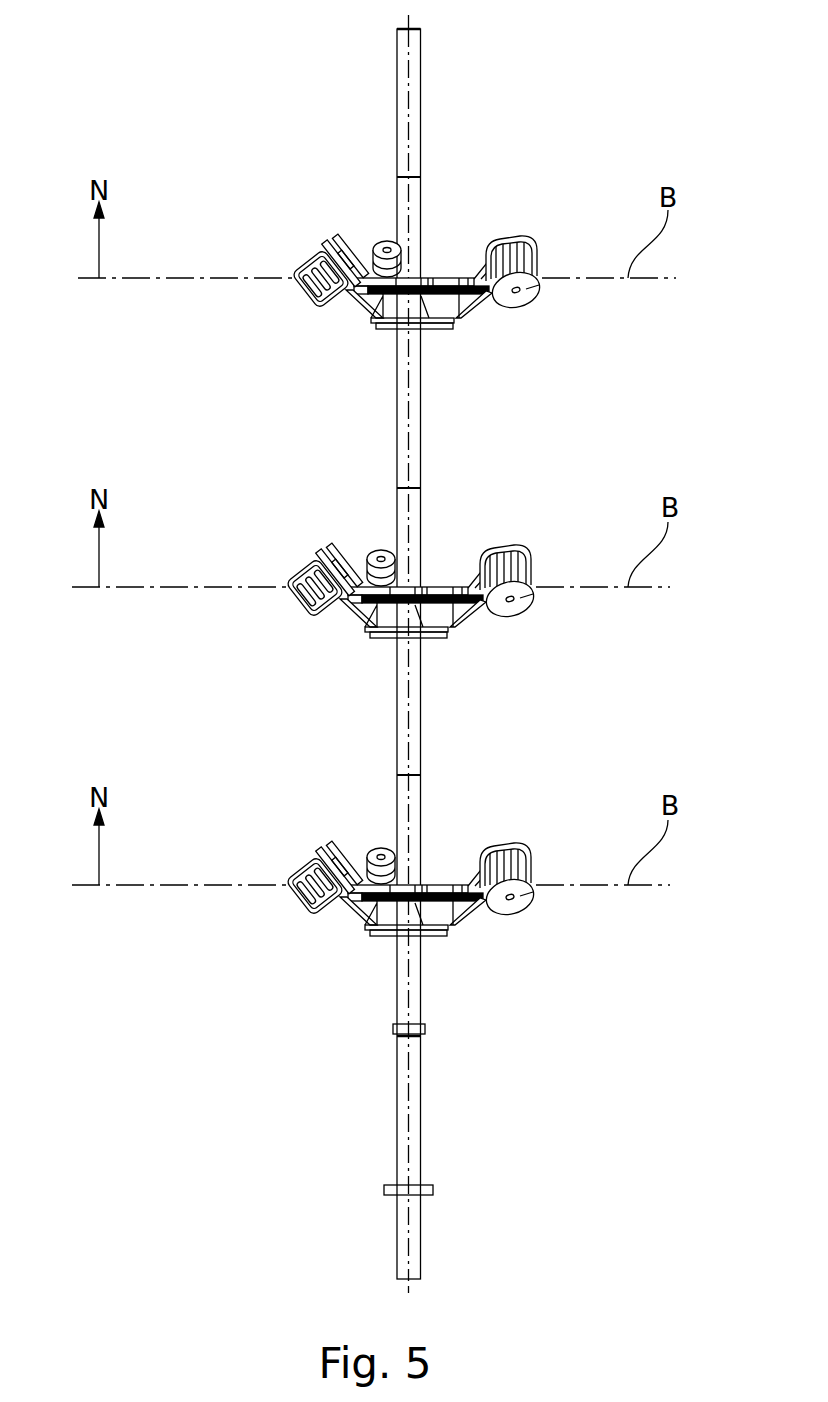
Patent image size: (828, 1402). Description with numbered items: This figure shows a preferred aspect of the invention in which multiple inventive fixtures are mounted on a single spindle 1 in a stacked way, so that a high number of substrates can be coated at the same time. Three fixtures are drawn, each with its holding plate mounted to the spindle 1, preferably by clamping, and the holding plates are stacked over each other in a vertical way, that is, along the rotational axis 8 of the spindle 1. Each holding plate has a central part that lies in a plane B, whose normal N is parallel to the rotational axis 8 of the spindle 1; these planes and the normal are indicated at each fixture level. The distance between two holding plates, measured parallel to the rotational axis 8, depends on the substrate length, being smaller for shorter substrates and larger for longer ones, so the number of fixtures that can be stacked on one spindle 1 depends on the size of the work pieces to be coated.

The spindle 1 is at (403, 376).
The rotational axis of the spindle 8 is at (408, 1103).